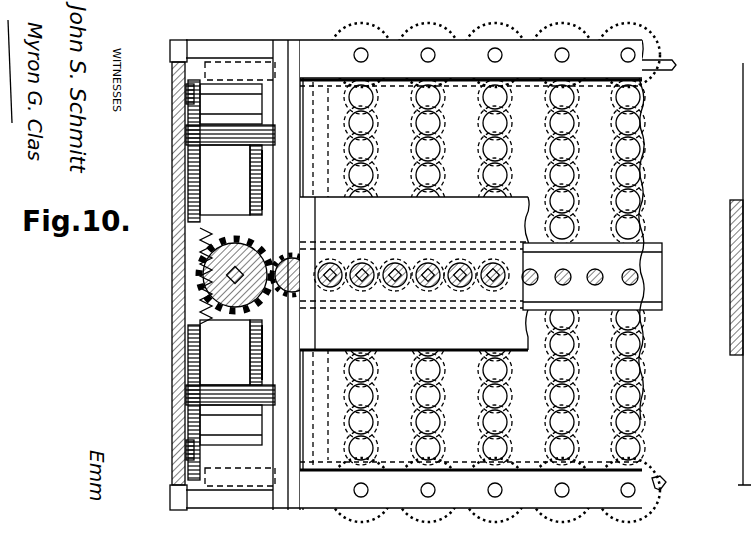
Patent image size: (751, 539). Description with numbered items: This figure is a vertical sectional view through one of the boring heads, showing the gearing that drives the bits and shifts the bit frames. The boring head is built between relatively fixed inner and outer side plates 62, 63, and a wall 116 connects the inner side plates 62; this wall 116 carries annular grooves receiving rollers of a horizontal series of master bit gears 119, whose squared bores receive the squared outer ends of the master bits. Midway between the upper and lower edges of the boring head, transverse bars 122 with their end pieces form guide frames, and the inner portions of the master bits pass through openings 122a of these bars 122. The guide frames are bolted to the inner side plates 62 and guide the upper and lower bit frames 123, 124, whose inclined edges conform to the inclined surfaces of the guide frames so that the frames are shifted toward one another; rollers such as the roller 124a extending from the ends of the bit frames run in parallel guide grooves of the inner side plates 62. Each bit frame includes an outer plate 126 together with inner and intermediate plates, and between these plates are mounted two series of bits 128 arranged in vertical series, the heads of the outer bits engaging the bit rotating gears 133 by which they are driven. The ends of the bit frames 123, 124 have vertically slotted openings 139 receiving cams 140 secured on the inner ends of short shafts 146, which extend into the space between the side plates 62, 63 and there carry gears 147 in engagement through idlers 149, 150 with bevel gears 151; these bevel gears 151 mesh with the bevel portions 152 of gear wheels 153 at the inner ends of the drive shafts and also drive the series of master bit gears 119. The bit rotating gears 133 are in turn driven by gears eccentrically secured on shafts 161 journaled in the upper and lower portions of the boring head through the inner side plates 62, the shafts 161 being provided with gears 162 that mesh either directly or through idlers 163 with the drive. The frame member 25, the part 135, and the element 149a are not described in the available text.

The frame 25 is at (315, 50).
The inner side plate 62 is at (280, 48).
The outer side plate 63 is at (172, 135).
The wall 116 is at (440, 210).
The master bit gear 119 is at (390, 252).
The transverse bar 122 is at (648, 260).
The opening of transverse bar 122a is at (642, 280).
The upper bit frame 123 is at (745, 104).
The lower bit frame 124 is at (650, 360).
The roller of lower bit frame 124a is at (750, 452).
The outer plate 126 is at (641, 150).
The bit 128 is at (575, 158).
The bit rotating gear 133 is at (410, 36).
The chain guide bar 135 is at (471, 289).
The vertically slotted opening 139 is at (260, 180).
The cam 140 is at (467, 273).
The short shaft 146 is at (745, 212).
The gear 147 is at (227, 265).
The idler 149 is at (186, 395).
The upper spring 149a is at (240, 115).
The idler 150 is at (188, 343).
The bevel gear 151 is at (200, 262).
The bevel portion 152 is at (240, 250).
The gear wheel 153 is at (205, 283).
The shaft 161 is at (228, 46).
The gear 162 is at (178, 86).
The idler 163 is at (186, 100).